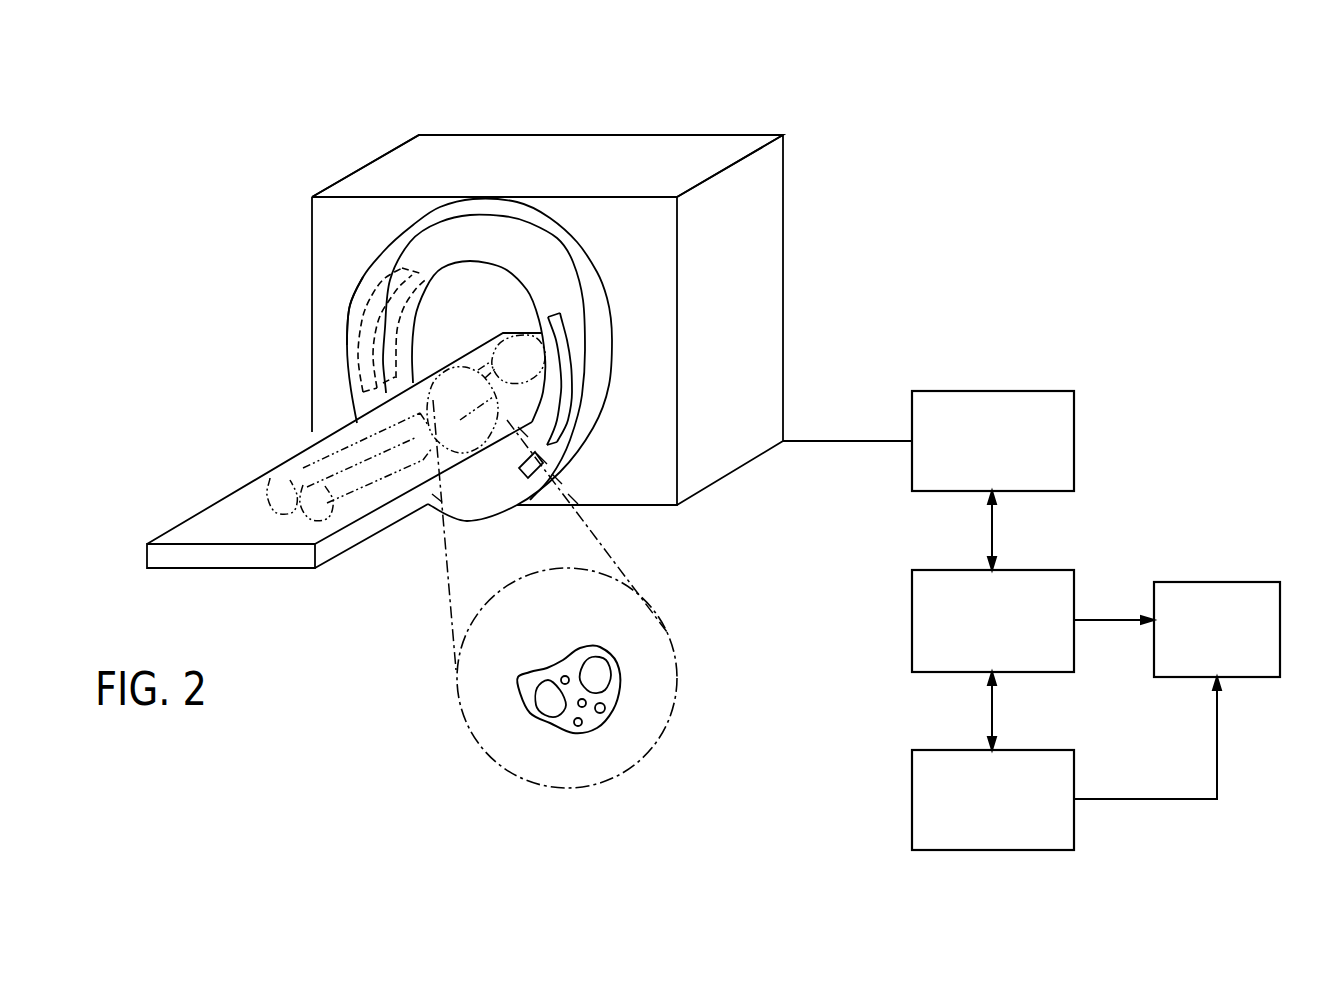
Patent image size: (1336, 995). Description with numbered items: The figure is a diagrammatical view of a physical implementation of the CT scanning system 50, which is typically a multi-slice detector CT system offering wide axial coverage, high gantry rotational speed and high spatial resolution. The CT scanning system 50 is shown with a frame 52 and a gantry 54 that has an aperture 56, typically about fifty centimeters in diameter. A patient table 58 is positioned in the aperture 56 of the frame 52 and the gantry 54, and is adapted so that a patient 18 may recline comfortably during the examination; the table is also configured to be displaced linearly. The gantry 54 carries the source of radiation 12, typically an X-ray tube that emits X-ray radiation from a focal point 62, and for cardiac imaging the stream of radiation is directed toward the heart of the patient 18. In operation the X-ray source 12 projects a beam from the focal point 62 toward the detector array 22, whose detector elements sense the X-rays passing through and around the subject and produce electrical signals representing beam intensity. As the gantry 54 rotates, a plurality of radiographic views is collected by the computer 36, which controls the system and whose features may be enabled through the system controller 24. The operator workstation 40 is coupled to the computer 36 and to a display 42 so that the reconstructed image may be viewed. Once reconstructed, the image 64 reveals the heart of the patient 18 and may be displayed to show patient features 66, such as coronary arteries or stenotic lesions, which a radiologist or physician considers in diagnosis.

The source of radiation 12 is at (355, 327).
The patient 18 is at (300, 447).
The detector array 22 is at (560, 387).
The system controller 24 is at (1076, 441).
The computer 36 is at (912, 619).
The operator workstation 40 is at (912, 788).
The display 42 is at (1282, 614).
The CT scanning system 50 is at (730, 101).
The frame 52 is at (768, 213).
The gantry 54 is at (460, 233).
The aperture 56 is at (480, 297).
The patient table 58 is at (280, 555).
The focal point 62 is at (367, 285).
The image 64 is at (666, 723).
The features 66 is at (618, 663).